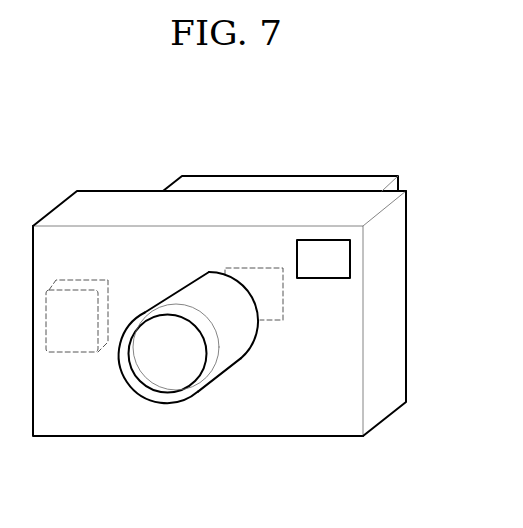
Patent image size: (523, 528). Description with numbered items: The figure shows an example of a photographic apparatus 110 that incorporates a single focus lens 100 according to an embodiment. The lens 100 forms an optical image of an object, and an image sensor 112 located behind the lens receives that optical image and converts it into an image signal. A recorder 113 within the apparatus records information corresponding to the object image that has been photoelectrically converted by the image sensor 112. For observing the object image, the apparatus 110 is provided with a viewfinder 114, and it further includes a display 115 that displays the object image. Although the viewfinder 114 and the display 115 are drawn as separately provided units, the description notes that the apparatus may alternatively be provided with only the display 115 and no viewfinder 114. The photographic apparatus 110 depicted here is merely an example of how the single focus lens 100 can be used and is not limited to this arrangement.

The single focus lens 100 is at (158, 382).
The photographic apparatus 110 is at (337, 425).
The image sensor 112 is at (260, 318).
The recorder 113 is at (72, 339).
The viewfinder 114 is at (350, 258).
The display 115 is at (282, 182).